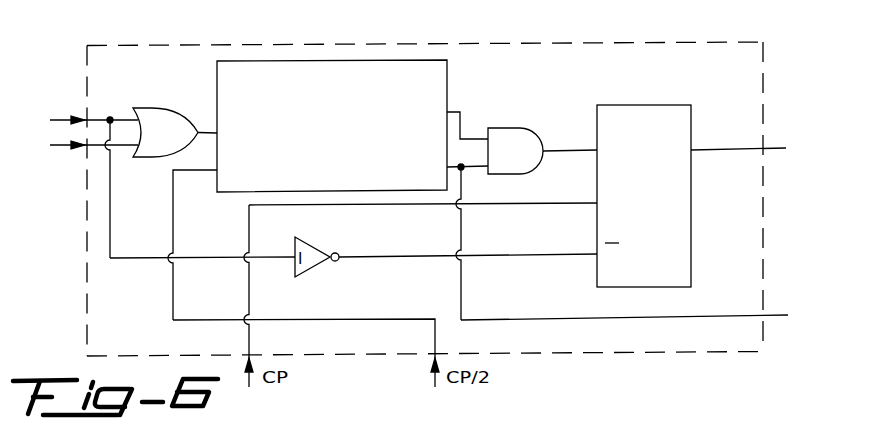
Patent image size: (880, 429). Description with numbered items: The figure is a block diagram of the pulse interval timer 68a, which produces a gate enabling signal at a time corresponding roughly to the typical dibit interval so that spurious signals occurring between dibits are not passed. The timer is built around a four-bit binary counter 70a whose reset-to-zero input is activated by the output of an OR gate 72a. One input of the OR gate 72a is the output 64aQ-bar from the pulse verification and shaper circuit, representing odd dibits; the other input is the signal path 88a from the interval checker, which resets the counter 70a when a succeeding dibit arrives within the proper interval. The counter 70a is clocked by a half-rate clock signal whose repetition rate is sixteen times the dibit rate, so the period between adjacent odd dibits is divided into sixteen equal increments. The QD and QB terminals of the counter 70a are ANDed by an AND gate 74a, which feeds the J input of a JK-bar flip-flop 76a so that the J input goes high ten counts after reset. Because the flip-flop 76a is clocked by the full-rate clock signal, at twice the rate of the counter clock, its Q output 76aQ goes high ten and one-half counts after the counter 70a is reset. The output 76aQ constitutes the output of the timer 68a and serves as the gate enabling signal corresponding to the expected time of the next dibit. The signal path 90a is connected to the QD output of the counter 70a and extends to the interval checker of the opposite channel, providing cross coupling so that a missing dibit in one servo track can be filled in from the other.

The pulse interval timer 68a is at (330, 44).
The 4-bit binary counter 70a is at (447, 70).
The OR gate 72a is at (153, 108).
The AND gate 74a is at (500, 128).
The JK-bar flip-flop 76a is at (632, 105).
The Q output of flip-flop 76aQ is at (770, 148).
The signal path 88a is at (54, 120).
The Q-bar output of pulse verification and shaper circuit 64aQ is at (68, 156).
The signal path 90a is at (775, 314).